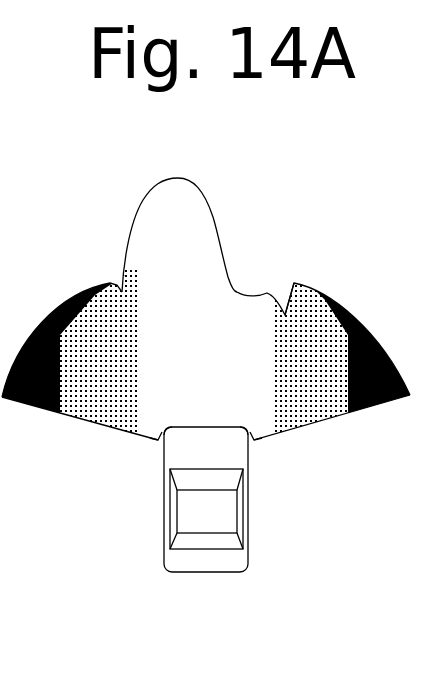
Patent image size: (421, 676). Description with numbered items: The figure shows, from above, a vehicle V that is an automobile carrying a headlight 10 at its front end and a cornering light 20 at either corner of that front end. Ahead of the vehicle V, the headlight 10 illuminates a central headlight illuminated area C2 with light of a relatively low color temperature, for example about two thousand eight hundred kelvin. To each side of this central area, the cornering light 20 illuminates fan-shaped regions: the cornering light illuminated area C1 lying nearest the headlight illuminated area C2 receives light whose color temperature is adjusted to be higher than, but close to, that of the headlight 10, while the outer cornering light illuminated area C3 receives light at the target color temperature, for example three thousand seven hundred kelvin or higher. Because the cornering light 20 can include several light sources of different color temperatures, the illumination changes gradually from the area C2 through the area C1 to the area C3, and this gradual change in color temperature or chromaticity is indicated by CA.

The headlight 10 is at (176, 422).
The cornering light 20 is at (160, 440).
The cornering light illuminated area nearest the headlight C1 is at (105, 303).
The headlight illuminated area C2 is at (180, 192).
The cornering light illuminated area at target color temperature C3 is at (27, 405).
The gradual change in color temperature CA is at (288, 315).
The vehicle V is at (233, 573).